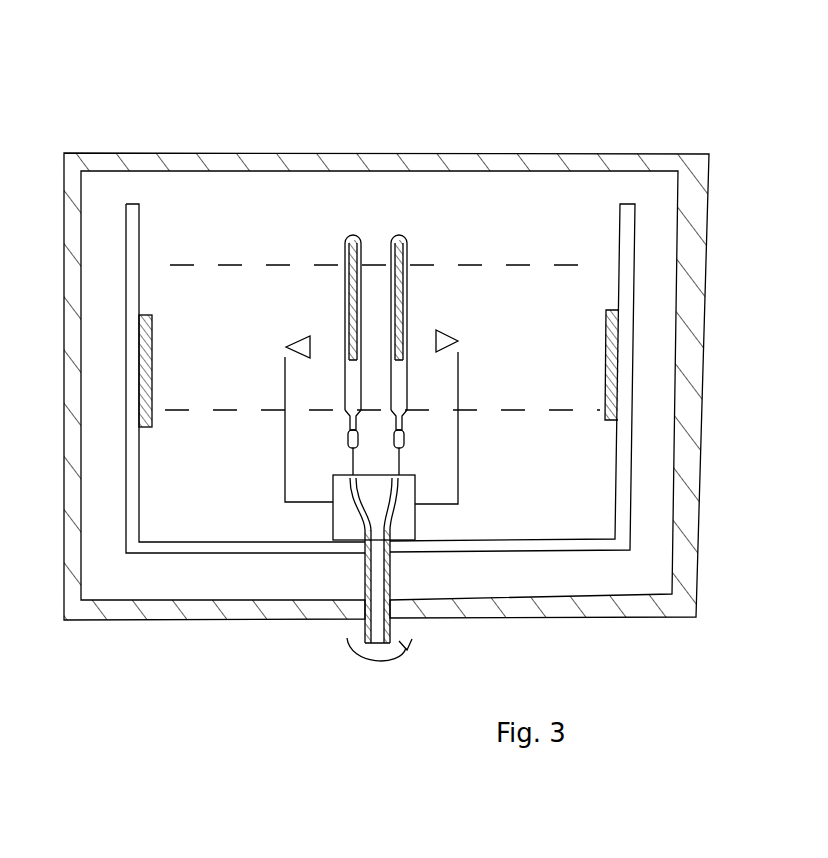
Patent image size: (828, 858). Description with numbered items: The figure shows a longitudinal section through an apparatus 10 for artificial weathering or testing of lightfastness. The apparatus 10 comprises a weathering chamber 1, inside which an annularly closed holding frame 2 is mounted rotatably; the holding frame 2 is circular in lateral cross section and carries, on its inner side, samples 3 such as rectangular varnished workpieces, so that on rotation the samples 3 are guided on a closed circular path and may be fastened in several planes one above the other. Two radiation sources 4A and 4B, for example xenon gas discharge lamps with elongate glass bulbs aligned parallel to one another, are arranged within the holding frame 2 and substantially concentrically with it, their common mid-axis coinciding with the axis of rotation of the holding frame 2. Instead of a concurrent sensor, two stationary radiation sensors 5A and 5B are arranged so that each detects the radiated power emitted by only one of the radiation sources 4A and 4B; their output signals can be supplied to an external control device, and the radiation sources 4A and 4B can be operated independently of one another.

The apparatus 10 is at (260, 52).
The weathering chamber 1 is at (633, 158).
The holding frame 2 is at (618, 243).
The samples 3 is at (152, 405).
The radiation source 4A is at (345, 258).
The radiation source 4B is at (408, 252).
The radiation sensor 5A is at (286, 347).
The radiation sensor 5B is at (458, 341).